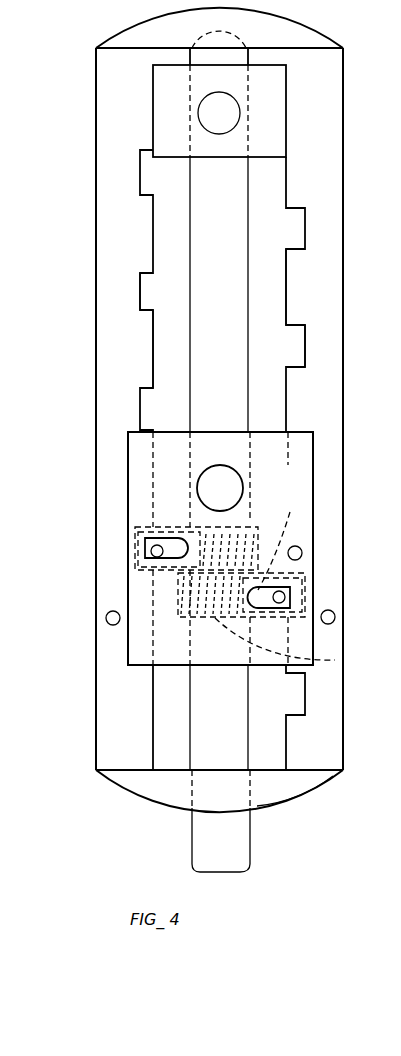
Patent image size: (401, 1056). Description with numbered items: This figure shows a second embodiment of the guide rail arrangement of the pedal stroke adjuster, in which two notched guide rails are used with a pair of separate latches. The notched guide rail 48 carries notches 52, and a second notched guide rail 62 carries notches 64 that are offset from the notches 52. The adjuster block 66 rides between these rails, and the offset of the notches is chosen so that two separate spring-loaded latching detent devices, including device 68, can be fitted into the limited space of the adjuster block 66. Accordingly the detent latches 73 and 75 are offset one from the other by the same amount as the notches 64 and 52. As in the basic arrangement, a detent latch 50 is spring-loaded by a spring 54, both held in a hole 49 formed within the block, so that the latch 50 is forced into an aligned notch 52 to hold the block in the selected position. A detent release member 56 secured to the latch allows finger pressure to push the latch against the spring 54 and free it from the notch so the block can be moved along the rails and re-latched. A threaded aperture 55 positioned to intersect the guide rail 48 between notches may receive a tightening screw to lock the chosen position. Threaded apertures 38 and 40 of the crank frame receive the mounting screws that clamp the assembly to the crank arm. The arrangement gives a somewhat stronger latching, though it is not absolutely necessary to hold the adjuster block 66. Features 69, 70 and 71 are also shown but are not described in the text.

The threaded aperture 38 is at (106, 620).
The threaded aperture 40 is at (335, 618).
The notched guide rail 48 is at (287, 305).
The hole 49 is at (208, 632).
The detent latch 50 is at (294, 510).
The notches 52 is at (305, 344).
The spring 54 is at (290, 662).
The threaded aperture 55 is at (302, 548).
The detent release member 56 is at (290, 598).
The second notched guide rail 62 is at (154, 337).
The notches 64 is at (139, 286).
The adjuster block 66 is at (305, 487).
The spring-loaded latching detent device 68 is at (268, 588).
The passage 69 is at (225, 538).
The recess 70 is at (147, 573).
The slot 71 is at (151, 549).
The detent latch 73 is at (310, 575).
The detent latch 75 is at (150, 528).